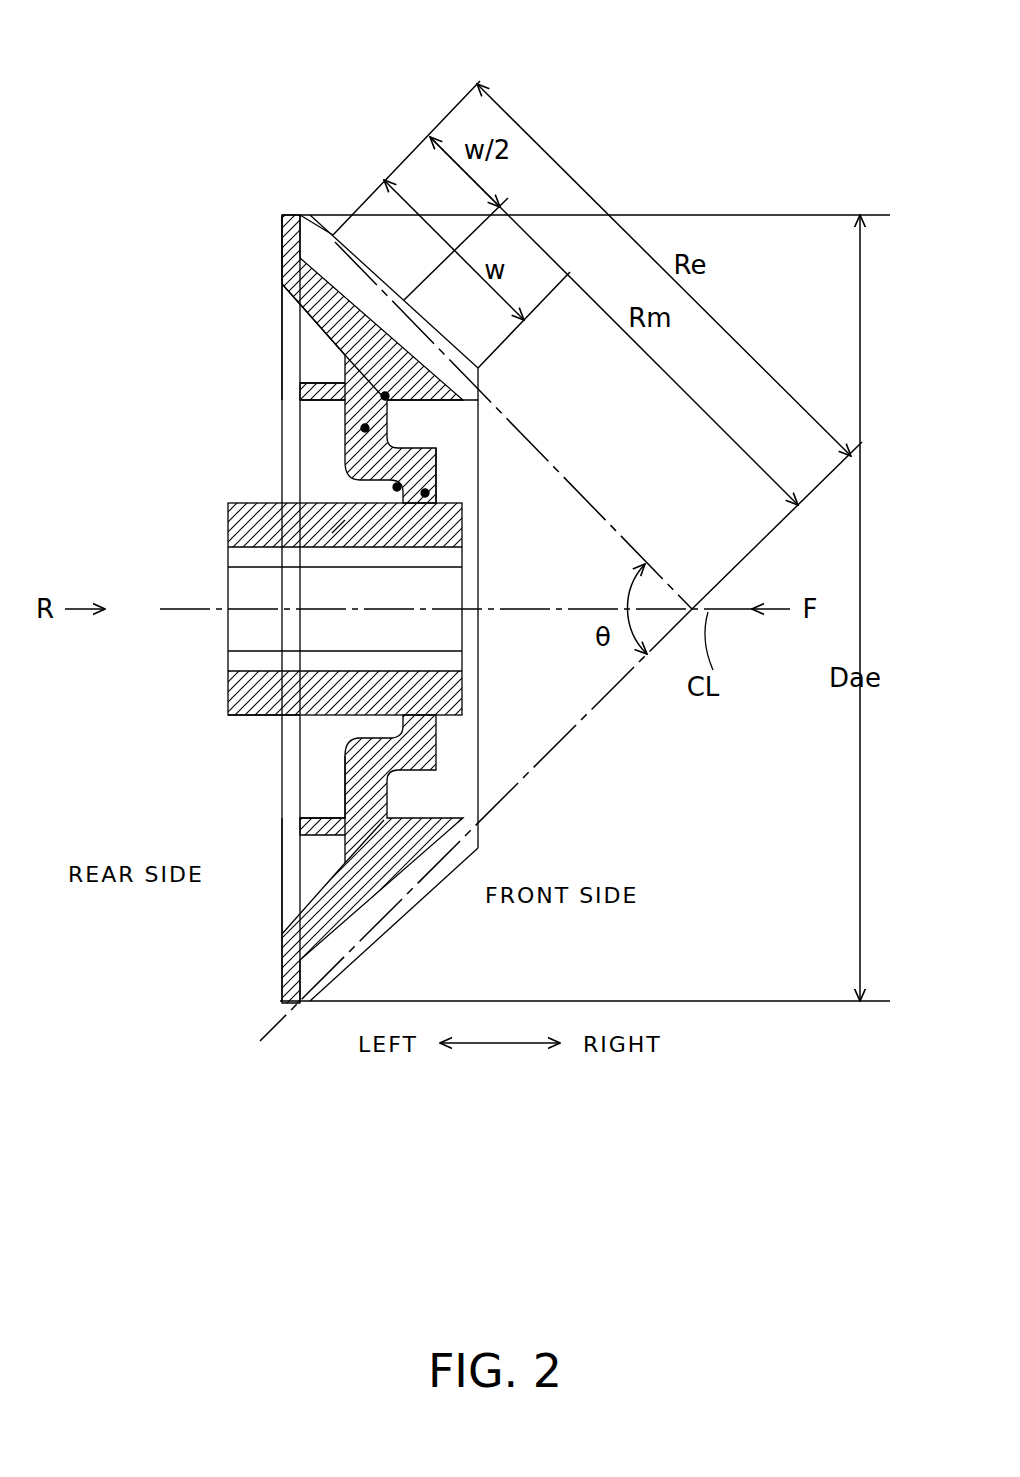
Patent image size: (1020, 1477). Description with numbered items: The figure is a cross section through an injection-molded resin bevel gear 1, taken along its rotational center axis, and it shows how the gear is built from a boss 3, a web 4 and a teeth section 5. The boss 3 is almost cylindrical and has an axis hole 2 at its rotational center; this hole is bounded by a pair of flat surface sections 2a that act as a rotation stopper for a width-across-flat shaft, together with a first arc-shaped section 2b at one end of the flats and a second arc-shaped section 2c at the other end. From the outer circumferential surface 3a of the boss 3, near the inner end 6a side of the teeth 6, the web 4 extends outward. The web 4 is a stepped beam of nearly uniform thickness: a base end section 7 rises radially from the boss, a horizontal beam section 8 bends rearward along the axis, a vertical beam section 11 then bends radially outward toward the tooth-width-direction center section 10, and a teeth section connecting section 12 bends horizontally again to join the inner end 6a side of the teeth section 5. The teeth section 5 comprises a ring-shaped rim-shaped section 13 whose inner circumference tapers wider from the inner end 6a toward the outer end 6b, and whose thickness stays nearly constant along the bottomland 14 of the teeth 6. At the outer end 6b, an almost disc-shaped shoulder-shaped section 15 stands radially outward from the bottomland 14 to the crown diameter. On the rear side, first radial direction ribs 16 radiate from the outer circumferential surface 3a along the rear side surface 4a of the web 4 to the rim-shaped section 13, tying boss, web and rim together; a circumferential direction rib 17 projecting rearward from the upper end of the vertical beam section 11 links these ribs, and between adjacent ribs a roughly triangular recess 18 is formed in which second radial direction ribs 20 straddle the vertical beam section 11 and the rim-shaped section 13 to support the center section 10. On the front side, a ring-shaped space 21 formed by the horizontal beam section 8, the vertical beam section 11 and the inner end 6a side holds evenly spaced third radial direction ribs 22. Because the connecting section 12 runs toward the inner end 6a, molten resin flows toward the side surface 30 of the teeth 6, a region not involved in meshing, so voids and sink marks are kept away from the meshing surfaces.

The injection-molded resin bevel gear 1 is at (258, 190).
The axis hole 2 is at (233, 627).
The flat surface section 2a is at (243, 583).
The first arc-shaped section 2b is at (250, 668).
The second arc-shaped section 2c is at (243, 553).
The boss 3 is at (247, 718).
The outer circumferential surface 3a is at (268, 500).
The web 4 is at (340, 470).
The side surface 4a is at (345, 778).
The teeth section 5 is at (333, 230).
The tooth 6 is at (437, 313).
The inner end 6a is at (483, 368).
The outer end 6b is at (345, 215).
The base end section 7 is at (402, 488).
The horizontal beam section 8 is at (332, 533).
The tooth-width-direction center section 10 is at (318, 345).
The vertical beam section 11 is at (339, 445).
The teeth section connecting section 12 is at (430, 420).
The rim-shaped section 13 is at (284, 320).
The bottomland 14 is at (285, 220).
The shoulder-shaped section 15 is at (283, 214).
The first radial direction rib 16 is at (284, 323).
The circumferential direction rib 17 is at (322, 398).
The recess 18 is at (322, 362).
The second radial direction rib 20 is at (320, 390).
The ring-shaped space 21 is at (445, 417).
The third radial direction rib 22 is at (430, 492).
The side surface 30 is at (484, 383).